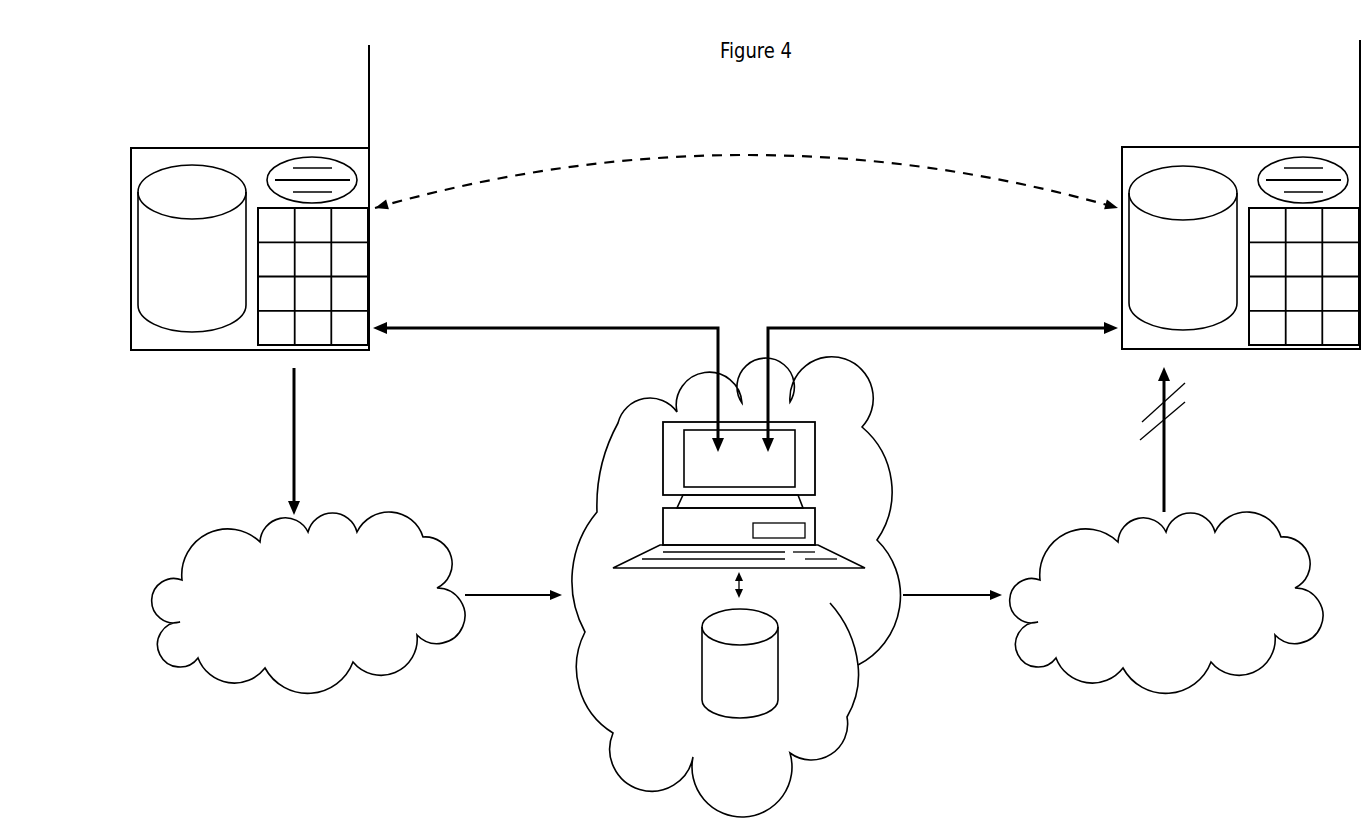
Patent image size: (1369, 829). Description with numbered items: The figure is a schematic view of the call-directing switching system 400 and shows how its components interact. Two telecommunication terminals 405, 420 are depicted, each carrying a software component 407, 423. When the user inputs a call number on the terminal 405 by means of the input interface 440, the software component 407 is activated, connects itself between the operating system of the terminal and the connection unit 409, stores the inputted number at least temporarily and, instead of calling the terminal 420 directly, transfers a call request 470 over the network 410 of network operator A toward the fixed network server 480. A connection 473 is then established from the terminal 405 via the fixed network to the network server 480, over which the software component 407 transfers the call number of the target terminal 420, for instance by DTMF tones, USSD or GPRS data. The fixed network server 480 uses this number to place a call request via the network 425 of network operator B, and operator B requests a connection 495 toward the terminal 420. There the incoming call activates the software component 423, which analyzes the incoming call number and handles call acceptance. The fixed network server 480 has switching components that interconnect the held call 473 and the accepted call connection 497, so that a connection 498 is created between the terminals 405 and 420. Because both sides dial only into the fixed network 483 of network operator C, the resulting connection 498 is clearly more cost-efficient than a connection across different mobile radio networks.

The call-directing switching system 400 is at (987, 72).
The telecommunication terminal 405 is at (299, 211).
The software component 407 is at (192, 248).
The connection unit 409 is at (368, 90).
The network 410 is at (308, 602).
The telecommunication terminal 420 is at (1241, 194).
The software component 423 is at (1183, 248).
The network 425 is at (1166, 602).
The input interface 440 is at (350, 267).
The call request / connection 470 is at (330, 441).
The connection 473 is at (548, 361).
The fixed network server 480 is at (739, 495).
The network 483 is at (700, 663).
The connection / incoming call 495 is at (1192, 439).
The accepted call connection 497 is at (940, 362).
The connection 498 is at (746, 152).